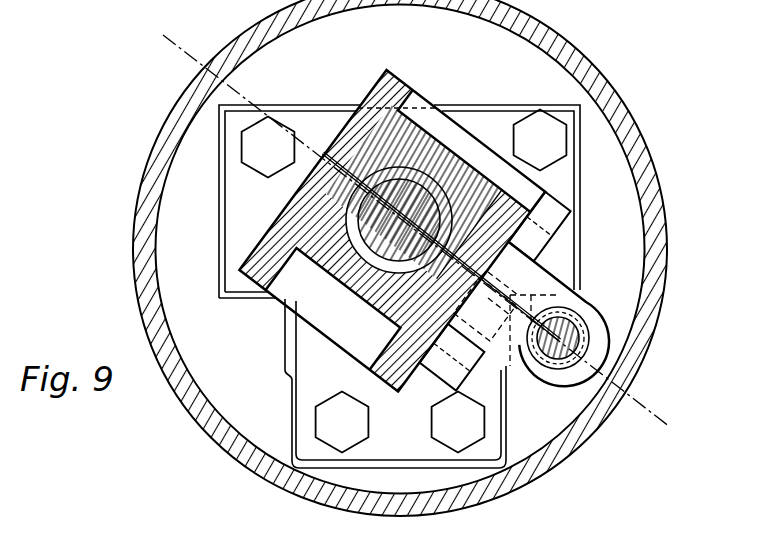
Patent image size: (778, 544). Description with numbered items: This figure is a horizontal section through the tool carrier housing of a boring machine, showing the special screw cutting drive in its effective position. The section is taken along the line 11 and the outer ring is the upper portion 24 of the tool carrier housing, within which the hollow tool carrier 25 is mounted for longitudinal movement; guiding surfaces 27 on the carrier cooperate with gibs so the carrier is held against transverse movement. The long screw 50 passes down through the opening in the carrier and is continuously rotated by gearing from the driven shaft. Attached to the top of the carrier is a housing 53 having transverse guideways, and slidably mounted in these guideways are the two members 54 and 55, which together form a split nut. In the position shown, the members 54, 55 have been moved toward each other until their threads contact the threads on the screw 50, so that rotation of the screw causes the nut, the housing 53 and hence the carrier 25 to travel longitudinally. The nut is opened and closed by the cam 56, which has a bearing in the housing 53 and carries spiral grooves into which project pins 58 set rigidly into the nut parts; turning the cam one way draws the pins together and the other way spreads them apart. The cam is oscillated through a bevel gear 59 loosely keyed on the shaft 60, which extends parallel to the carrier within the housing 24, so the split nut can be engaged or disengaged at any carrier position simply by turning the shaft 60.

The section line 11- 11 is at (140, 41).
The upper portion of tool carrier housing 24 is at (612, 93).
The tool carrier 25 is at (220, 249).
The guiding surfaces 27 is at (285, 339).
The screw 50 is at (337, 278).
The housing 53 is at (290, 199).
The split nut member 54 is at (418, 133).
The split nut member 55 is at (320, 262).
The cam 56 is at (571, 213).
The pins 58 is at (452, 310).
The bevel gear 59 is at (581, 270).
The shaft 60 is at (568, 327).